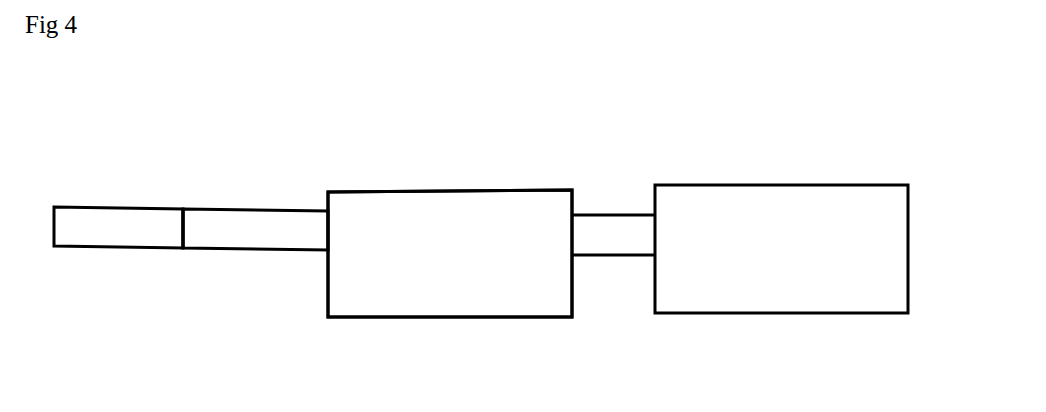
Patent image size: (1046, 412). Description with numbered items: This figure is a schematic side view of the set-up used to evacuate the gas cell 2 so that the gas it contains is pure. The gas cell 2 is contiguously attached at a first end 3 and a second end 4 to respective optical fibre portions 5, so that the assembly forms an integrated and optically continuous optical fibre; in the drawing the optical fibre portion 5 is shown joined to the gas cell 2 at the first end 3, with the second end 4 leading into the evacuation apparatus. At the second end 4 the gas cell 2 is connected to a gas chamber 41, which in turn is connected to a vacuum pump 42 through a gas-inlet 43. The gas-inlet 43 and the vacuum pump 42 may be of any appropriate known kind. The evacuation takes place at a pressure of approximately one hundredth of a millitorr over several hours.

The gas cell 2 is at (232, 250).
The first end 3 is at (183, 207).
The second end 4 is at (330, 192).
The optical fibre portion 5 is at (104, 248).
The gas chamber 41 is at (450, 253).
The vacuum pump 42 is at (781, 249).
The gas-inlet 43 is at (609, 215).